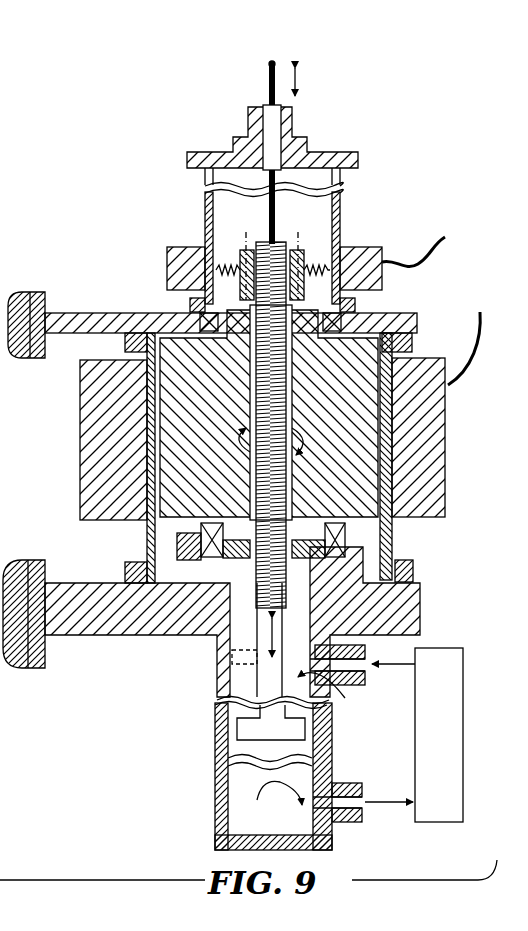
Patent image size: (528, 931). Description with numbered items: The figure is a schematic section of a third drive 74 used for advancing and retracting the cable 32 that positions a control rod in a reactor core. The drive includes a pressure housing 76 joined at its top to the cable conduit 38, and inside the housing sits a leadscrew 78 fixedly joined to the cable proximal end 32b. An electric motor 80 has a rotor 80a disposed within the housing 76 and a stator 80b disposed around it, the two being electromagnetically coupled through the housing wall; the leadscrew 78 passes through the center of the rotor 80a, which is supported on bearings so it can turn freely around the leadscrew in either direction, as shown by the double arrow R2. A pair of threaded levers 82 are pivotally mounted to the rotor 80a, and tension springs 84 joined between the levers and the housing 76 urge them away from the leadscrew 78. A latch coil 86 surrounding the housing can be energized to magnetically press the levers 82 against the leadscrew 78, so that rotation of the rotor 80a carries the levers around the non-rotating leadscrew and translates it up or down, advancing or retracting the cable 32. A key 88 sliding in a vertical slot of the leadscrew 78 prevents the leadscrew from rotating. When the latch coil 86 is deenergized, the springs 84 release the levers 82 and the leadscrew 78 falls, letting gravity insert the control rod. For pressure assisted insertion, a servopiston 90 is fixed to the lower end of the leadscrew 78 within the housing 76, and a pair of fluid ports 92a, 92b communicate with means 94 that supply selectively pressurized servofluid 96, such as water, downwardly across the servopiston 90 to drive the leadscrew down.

The cable 32 is at (268, 93).
The cable conduit 38 is at (298, 126).
The cable proximal end 32b is at (266, 233).
The levers 82 is at (312, 256).
The latch coil 86 is at (170, 262).
The tension springs 84 is at (167, 280).
The third drive 74 is at (462, 213).
The rotor 80a is at (378, 316).
The stator 80b is at (423, 357).
The electric motor 80 is at (453, 456).
The pressure housing 76 is at (395, 556).
The rotation directions R2 is at (302, 447).
The leadscrew 78 is at (287, 508).
The key 88 is at (221, 688).
The fluid port 92a is at (366, 677).
The servopiston 90 is at (226, 762).
The fluid port 92b is at (352, 782).
The servofluid 96 is at (303, 749).
The means for providing pressurized servofluid 94 is at (446, 648).